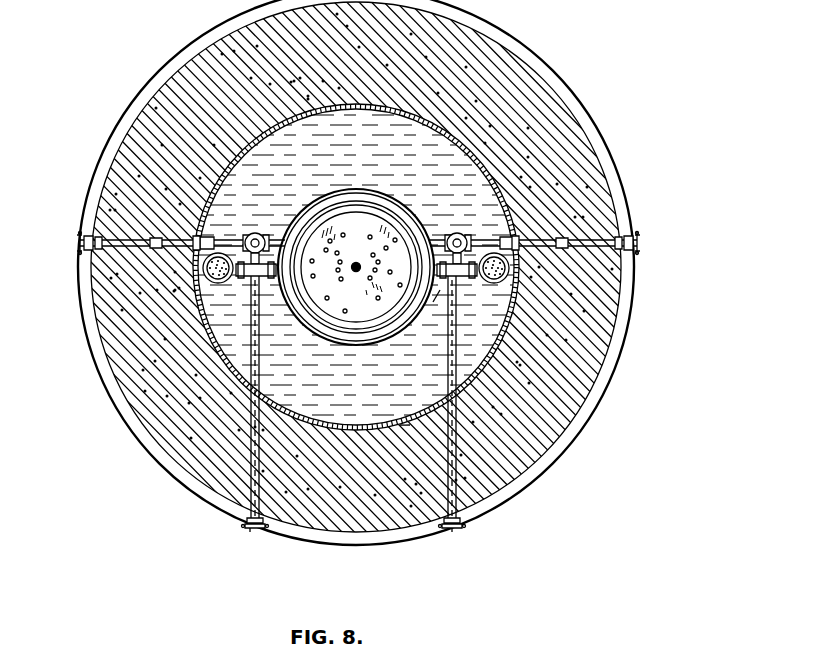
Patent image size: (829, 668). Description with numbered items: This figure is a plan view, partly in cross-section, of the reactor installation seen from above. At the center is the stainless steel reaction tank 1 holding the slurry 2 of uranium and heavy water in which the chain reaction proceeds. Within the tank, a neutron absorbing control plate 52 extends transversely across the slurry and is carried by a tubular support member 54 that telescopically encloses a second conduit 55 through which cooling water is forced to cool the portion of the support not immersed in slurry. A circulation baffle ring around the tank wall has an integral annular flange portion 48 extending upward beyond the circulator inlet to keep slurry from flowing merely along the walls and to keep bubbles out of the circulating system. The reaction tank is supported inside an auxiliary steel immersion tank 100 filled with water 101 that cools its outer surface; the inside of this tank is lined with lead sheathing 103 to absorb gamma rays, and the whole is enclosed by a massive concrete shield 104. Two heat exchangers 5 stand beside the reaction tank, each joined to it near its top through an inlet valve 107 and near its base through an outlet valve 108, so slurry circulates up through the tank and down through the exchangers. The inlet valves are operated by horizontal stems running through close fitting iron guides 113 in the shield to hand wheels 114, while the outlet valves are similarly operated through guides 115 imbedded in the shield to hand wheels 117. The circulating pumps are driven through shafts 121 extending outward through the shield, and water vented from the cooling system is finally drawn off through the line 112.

The reaction tank 1 is at (372, 190).
The slurry 2 is at (400, 207).
The heat exchanger 5 is at (215, 279).
The annular flange portion 48 is at (427, 223).
The control plate 52 is at (301, 212).
The tubular support member 54 is at (368, 252).
The conduit 55 is at (355, 271).
The immersion tank 100 is at (513, 325).
The water 101 is at (405, 422).
The lead sheathing 103 is at (487, 348).
The concrete shield 104 is at (553, 147).
The inlet valve 107 is at (256, 232).
The outlet valve 108 is at (250, 278).
The line 112 is at (200, 236).
The guide 113 is at (175, 247).
The hand wheel 114 is at (78, 246).
The guide 115 is at (232, 503).
The hand wheel 117 is at (250, 530).
The shaft 121 is at (222, 190).